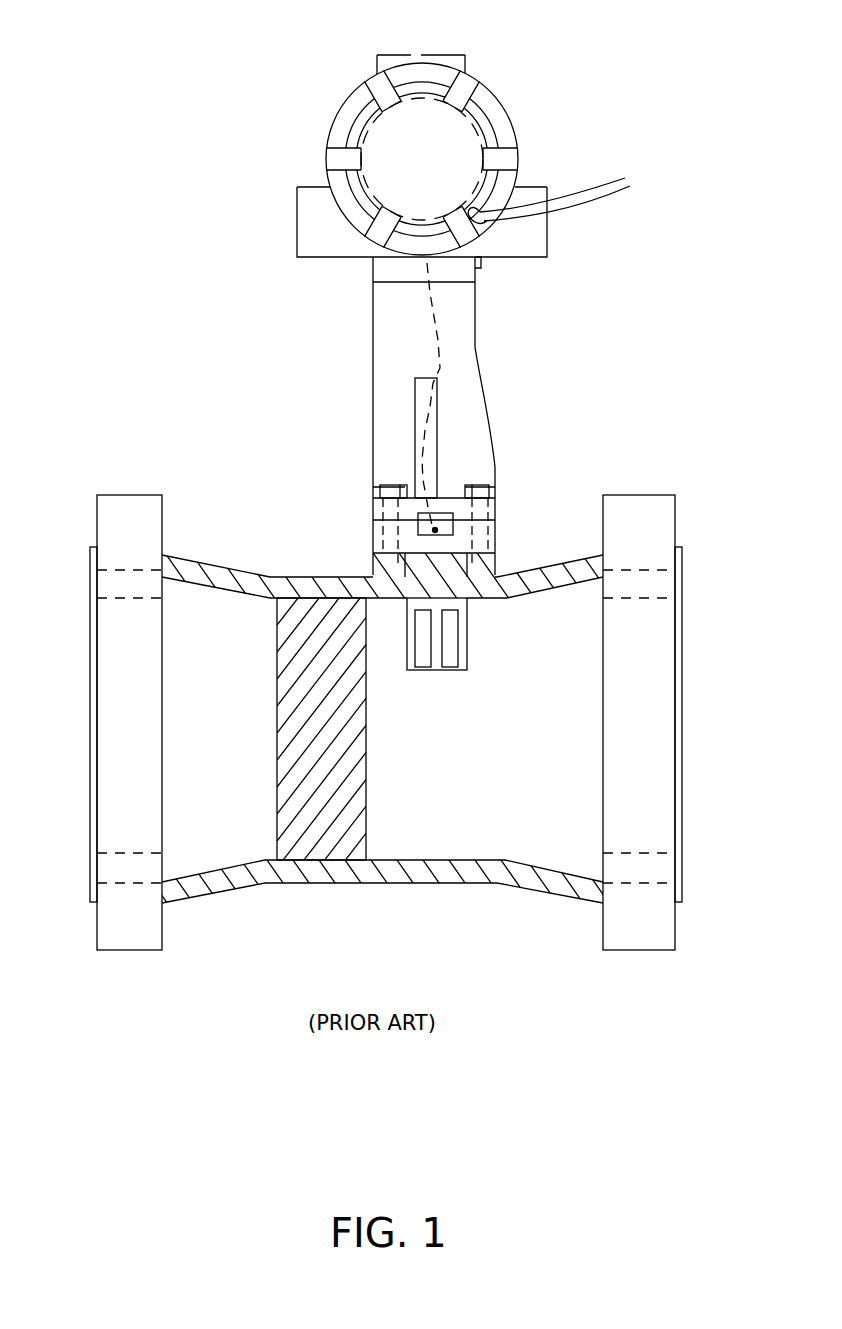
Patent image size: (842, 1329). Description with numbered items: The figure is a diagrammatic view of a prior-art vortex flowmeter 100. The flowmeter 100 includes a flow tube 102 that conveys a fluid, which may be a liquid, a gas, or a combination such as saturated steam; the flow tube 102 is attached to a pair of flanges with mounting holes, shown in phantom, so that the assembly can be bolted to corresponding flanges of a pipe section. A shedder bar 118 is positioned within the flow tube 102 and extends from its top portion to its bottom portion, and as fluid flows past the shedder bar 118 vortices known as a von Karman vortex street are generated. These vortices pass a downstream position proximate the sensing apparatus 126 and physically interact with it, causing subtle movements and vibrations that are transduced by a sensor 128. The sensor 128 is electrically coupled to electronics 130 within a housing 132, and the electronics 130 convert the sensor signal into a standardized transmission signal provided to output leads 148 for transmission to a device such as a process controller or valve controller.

The vortex flowmeter 100 is at (562, 64).
The flow tube 102 is at (183, 902).
The shedder bar 118 is at (422, 787).
The sensing apparatus 126 is at (468, 655).
The sensor 128 is at (437, 528).
The electronics 130 is at (480, 147).
The housing 132 is at (360, 87).
The output leads 148 is at (590, 207).